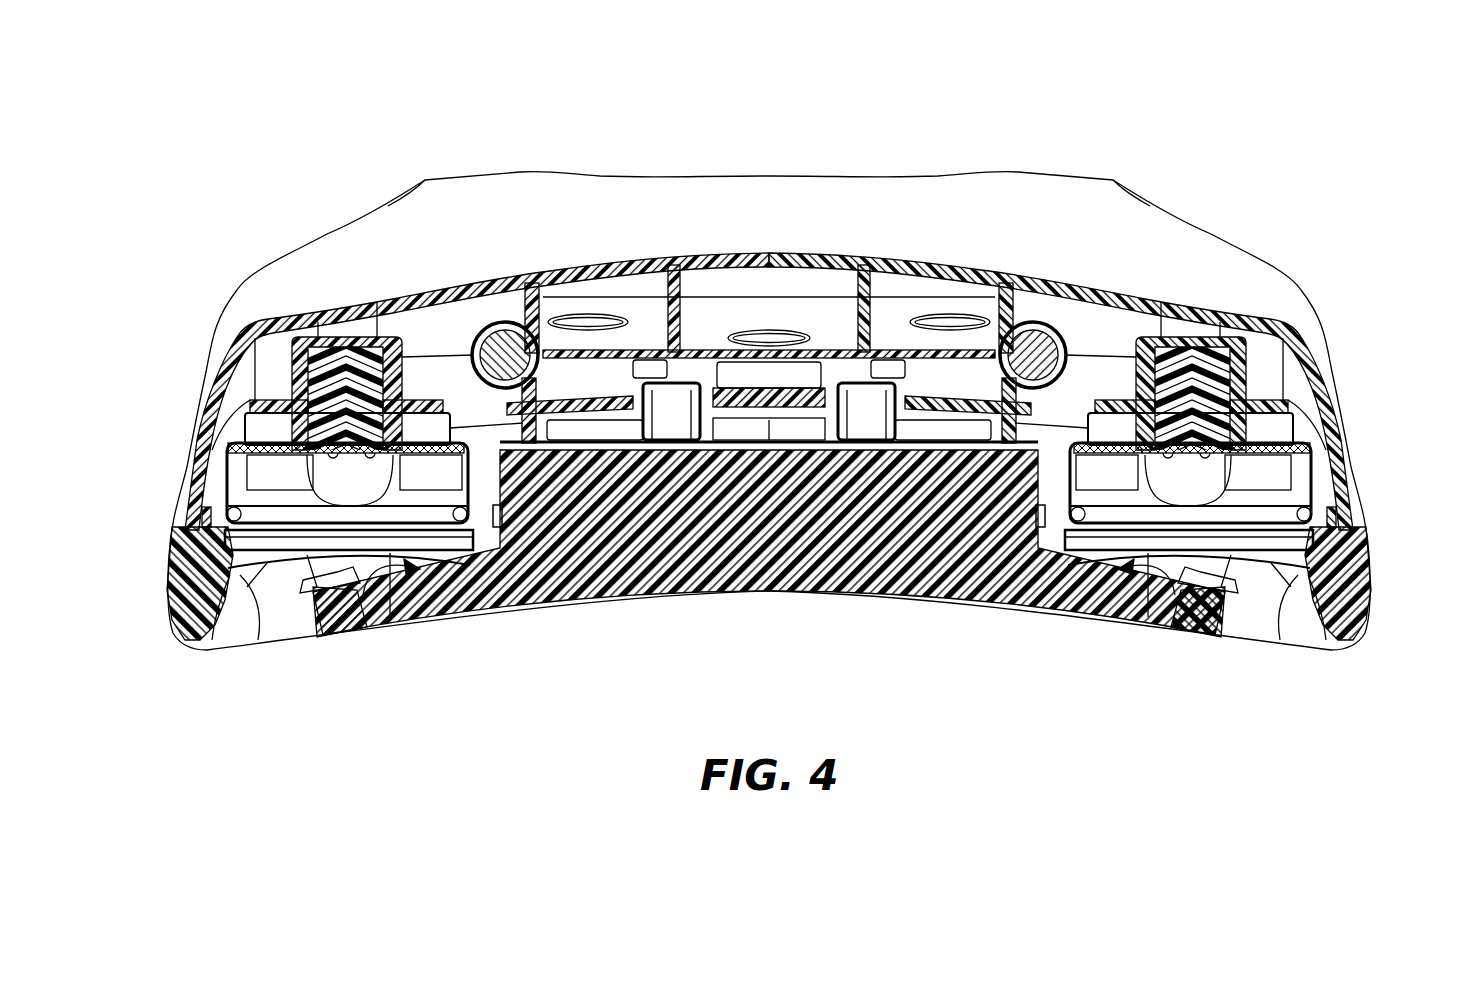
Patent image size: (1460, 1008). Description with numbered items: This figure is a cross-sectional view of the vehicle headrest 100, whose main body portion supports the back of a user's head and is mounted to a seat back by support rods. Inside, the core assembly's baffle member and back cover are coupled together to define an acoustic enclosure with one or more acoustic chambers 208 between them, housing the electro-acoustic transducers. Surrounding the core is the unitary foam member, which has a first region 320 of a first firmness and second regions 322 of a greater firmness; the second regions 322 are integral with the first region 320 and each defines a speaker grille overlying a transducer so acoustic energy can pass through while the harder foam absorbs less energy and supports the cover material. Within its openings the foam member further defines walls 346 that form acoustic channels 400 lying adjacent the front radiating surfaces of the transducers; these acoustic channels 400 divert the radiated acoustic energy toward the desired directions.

The vehicle headrest 100 is at (1200, 100).
The acoustic chamber 208 is at (447, 325).
The first region 320 is at (683, 562).
The second region 322 is at (180, 612).
The wall 346 is at (250, 598).
The acoustic channel 400 is at (317, 588).